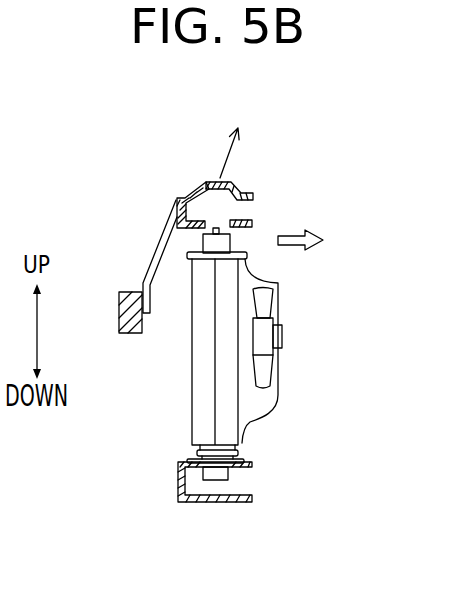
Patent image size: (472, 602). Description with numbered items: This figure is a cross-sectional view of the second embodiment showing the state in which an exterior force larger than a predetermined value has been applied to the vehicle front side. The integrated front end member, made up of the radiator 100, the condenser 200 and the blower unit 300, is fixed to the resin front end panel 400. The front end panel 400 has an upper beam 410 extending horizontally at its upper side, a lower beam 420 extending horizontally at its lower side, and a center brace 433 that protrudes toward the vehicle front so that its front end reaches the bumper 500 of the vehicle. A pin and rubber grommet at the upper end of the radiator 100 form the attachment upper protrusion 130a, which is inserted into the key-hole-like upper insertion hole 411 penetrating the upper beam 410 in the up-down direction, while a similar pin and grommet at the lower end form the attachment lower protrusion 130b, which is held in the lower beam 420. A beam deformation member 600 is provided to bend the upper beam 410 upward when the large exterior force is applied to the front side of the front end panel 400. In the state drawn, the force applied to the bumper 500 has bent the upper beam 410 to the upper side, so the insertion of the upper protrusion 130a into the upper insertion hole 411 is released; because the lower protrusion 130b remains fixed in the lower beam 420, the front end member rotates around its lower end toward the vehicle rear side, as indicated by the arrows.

The radiator 100 is at (232, 408).
The attachment upper protrusion 130a is at (225, 241).
The attachment lower protrusion 130b is at (228, 479).
The condenser 200 is at (198, 407).
The blower unit 300 is at (262, 302).
The front end panel 400 is at (234, 176).
The upper beam 410 is at (205, 182).
The upper insertion hole 411 is at (218, 223).
The lower beam 420 is at (235, 503).
The center brace 433 is at (163, 242).
The bumper 500 is at (130, 333).
The beam deformation member 600 is at (117, 285).